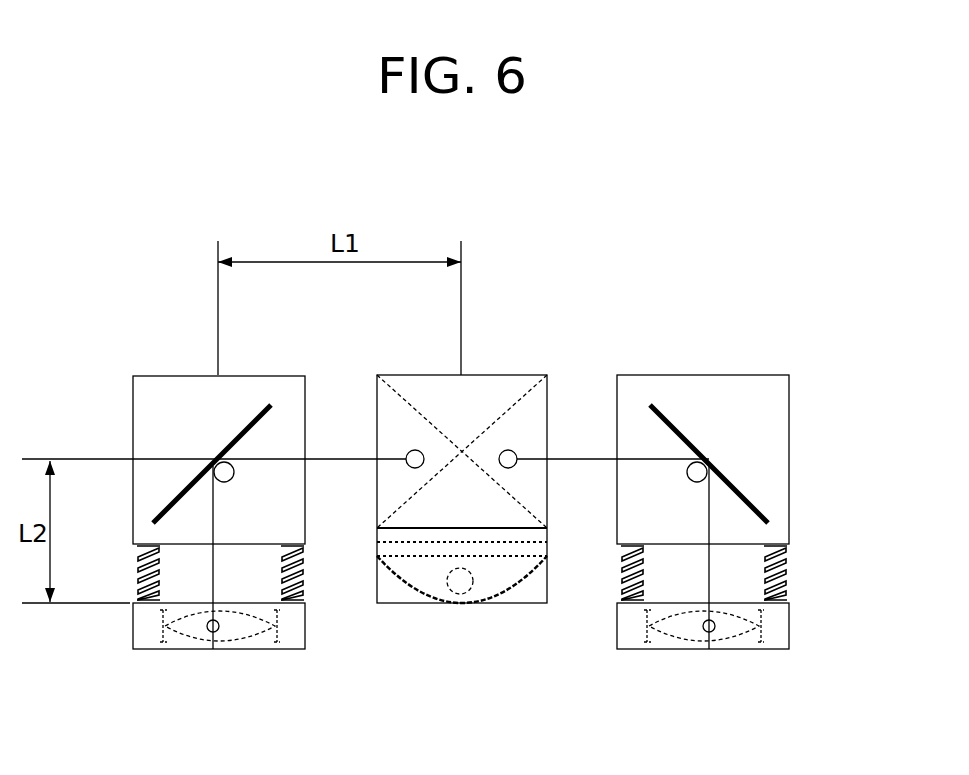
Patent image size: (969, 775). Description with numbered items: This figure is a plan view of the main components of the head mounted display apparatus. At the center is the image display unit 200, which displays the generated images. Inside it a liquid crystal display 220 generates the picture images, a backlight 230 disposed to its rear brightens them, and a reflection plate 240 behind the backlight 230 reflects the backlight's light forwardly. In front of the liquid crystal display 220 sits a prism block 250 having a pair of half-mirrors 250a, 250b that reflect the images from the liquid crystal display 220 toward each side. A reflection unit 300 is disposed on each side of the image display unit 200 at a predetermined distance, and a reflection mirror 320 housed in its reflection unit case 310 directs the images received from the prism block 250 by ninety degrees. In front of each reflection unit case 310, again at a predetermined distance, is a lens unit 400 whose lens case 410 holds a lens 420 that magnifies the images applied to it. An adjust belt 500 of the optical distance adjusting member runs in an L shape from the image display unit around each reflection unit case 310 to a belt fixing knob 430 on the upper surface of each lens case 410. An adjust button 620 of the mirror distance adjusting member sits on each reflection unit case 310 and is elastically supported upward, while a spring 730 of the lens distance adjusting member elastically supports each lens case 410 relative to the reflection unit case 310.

The image display unit 200 is at (472, 474).
The liquid crystal display 220 is at (377, 549).
The backlight 230 is at (460, 592).
The reflection plate 240 is at (512, 590).
The prism block 250 is at (457, 411).
The half-mirror 250a is at (487, 378).
The half-mirror 250b is at (537, 513).
The reflection unit 300 is at (481, 405).
The reflection unit case 310 is at (153, 375).
The reflection mirror 320 is at (252, 412).
The lens unit 400 is at (467, 686).
The lens case 410 is at (140, 623).
The lens 420 is at (187, 635).
The belt fixing knob 430 is at (211, 634).
The adjust belt 500 is at (346, 450).
The adjust button 620 is at (215, 471).
The spring 730 is at (143, 578).